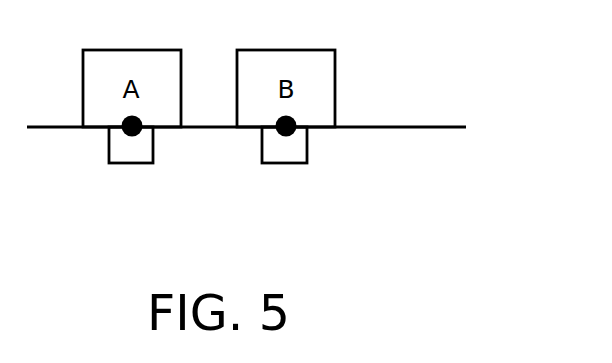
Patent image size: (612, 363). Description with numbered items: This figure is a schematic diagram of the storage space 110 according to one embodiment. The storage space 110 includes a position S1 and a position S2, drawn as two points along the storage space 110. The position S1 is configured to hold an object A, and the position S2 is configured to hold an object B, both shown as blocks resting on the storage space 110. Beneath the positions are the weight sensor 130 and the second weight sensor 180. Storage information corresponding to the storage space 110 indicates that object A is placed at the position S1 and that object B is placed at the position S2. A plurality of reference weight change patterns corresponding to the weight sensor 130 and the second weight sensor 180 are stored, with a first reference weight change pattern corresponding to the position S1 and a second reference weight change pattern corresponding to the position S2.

The storage space 110 is at (417, 127).
The weight sensor 130 is at (130, 164).
The second weight sensor 180 is at (283, 164).
The position S1 is at (126, 136).
The position S2 is at (280, 135).